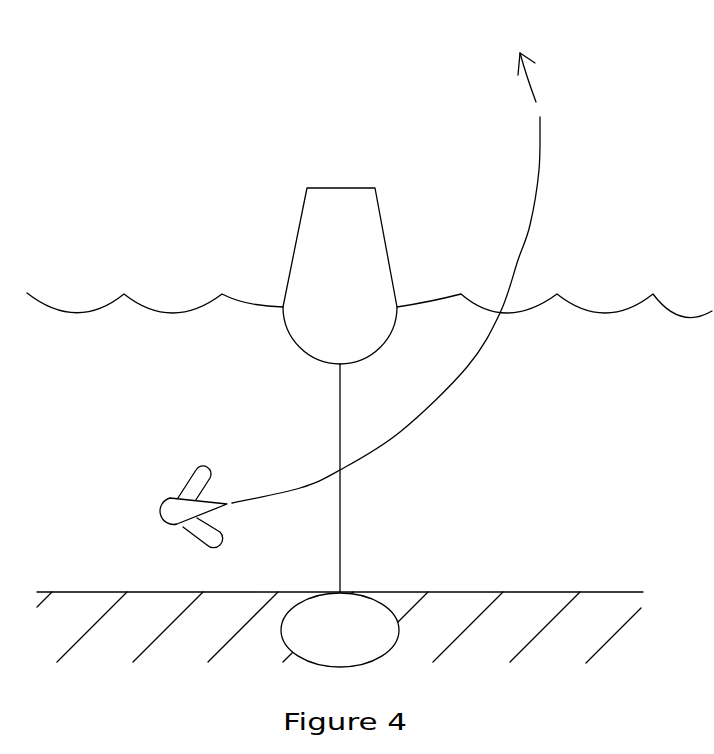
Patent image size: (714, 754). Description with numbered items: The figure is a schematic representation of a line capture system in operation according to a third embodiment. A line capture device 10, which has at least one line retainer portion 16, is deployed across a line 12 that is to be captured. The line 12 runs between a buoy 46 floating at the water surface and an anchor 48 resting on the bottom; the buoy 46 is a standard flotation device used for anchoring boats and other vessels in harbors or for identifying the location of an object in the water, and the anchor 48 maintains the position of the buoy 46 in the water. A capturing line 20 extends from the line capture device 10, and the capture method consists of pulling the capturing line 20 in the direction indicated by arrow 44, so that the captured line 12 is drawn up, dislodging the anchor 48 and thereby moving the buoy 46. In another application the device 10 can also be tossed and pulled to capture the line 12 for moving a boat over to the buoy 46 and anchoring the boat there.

The line capture device 10 is at (135, 504).
The line 12 is at (338, 418).
The line retainer portion 16 is at (195, 468).
The capturing line 20 is at (467, 367).
The arrow 44 is at (518, 61).
The buoy 46 is at (298, 227).
The anchor 48 is at (352, 620).